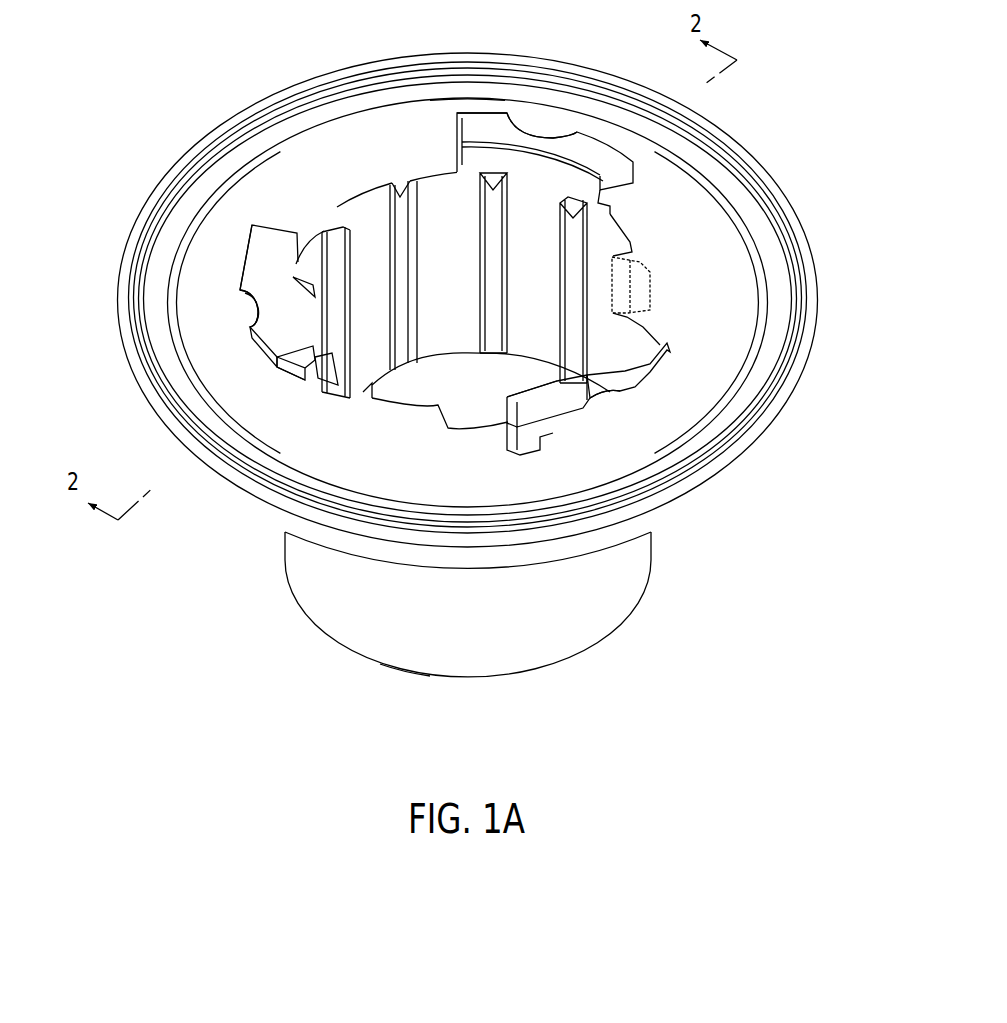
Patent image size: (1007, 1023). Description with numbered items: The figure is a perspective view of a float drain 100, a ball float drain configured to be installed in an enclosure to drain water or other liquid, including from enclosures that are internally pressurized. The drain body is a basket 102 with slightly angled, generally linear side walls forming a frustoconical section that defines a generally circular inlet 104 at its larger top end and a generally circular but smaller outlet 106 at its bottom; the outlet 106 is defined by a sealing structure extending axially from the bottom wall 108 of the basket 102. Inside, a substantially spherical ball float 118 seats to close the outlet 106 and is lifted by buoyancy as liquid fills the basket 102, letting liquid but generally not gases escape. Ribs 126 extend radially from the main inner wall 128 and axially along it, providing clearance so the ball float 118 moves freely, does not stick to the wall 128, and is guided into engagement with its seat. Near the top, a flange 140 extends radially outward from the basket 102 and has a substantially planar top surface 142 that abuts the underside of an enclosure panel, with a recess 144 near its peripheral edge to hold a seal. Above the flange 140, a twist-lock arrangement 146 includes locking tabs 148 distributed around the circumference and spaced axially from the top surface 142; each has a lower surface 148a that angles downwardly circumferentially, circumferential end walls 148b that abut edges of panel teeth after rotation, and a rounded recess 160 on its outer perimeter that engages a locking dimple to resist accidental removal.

The float drain 100 is at (823, 93).
The basket 102 is at (667, 574).
The inlet 104 is at (372, 253).
The outlet 106 is at (500, 702).
The bottom wall 108 is at (406, 672).
The ball float 118 is at (458, 356).
The ribs 126 is at (333, 250).
The main inner wall 128 is at (527, 315).
The flange 140 is at (792, 422).
The top surface 142 is at (727, 310).
The recess 144 is at (780, 343).
The twist-lock arrangement 146 is at (480, 106).
The locking tabs 148 is at (607, 143).
The lower surfaces 148a is at (257, 358).
The circumferential end walls 148b is at (243, 250).
The rounded recess 160 is at (537, 127).